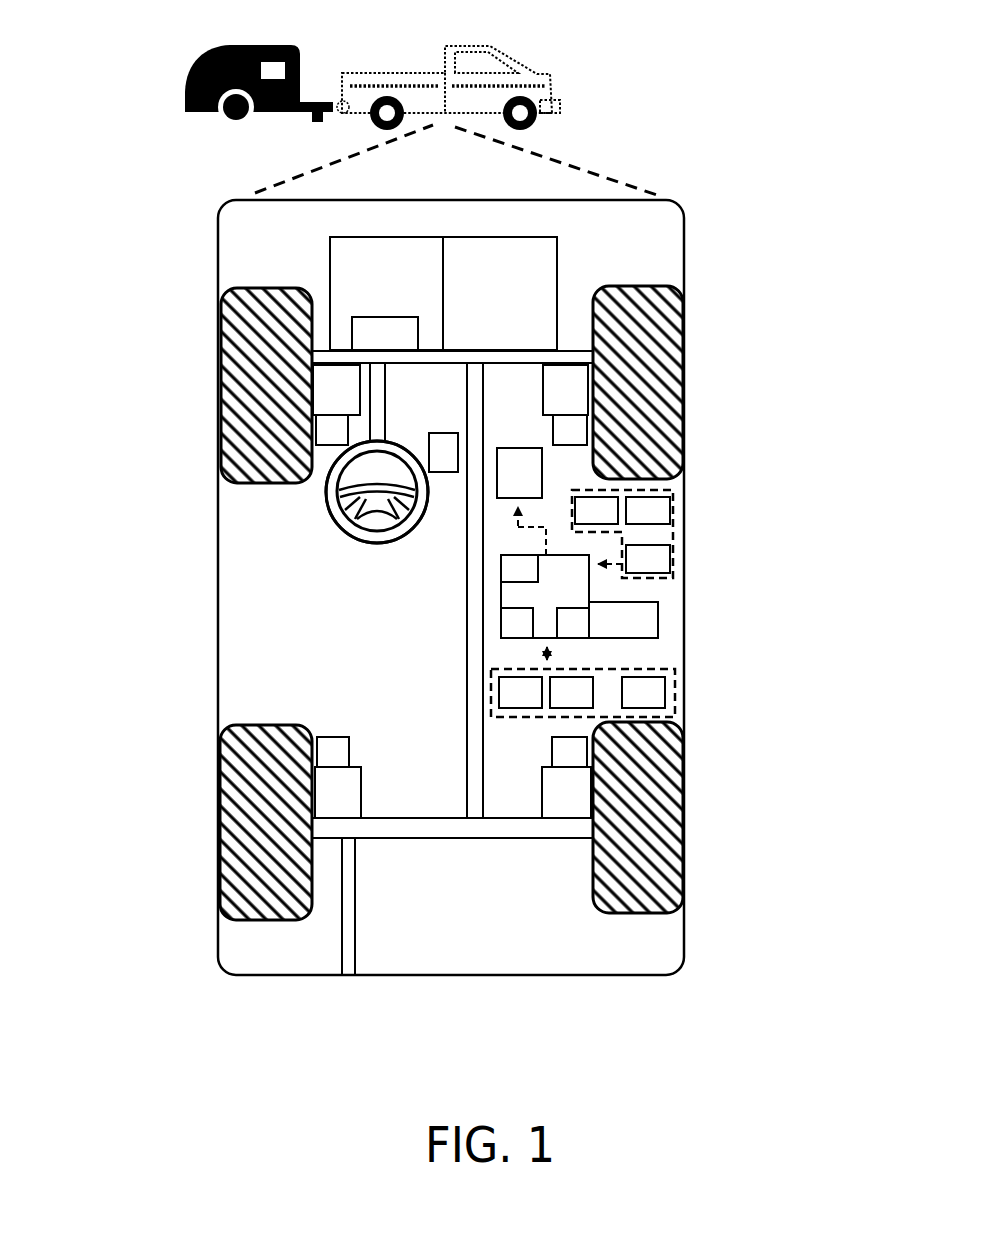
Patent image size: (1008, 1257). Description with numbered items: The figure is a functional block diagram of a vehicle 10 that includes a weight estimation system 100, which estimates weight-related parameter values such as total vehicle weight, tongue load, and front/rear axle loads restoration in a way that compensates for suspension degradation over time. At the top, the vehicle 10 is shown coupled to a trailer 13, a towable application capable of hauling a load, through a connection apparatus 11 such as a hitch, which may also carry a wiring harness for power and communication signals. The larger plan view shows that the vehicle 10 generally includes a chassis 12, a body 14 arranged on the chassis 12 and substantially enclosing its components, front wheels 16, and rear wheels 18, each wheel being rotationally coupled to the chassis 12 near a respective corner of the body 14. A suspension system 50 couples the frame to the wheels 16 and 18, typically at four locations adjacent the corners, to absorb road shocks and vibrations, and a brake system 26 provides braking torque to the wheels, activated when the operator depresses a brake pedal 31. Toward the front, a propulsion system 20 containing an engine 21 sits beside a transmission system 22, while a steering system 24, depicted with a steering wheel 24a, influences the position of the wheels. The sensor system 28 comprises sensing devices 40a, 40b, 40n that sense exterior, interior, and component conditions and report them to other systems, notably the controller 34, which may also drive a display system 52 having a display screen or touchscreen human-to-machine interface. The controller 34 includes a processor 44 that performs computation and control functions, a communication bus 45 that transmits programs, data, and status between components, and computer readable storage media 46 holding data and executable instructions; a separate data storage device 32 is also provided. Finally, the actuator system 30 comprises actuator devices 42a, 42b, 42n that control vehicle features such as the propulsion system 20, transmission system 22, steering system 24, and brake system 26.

The vehicle 10 is at (535, 72).
The connection apparatus 11 is at (315, 100).
The chassis 12 is at (467, 755).
The trailer 13 is at (191, 67).
The body 14 is at (218, 682).
The front wheels 16 is at (272, 287).
The rear wheels 18 is at (283, 918).
The propulsion system 20 is at (374, 306).
The engine 21 is at (373, 344).
The transmission system 22 is at (486, 306).
The steering system 24 is at (387, 438).
The steering wheel 24a is at (340, 523).
The brake system 26 is at (324, 400).
The sensor system 28 is at (648, 534).
The actuator system 30 is at (583, 726).
The brake pedal 31 is at (430, 462).
The data storage device 32 is at (610, 631).
The controller 34 is at (532, 607).
The sensing device 40a is at (577, 521).
The sensing device 40b is at (629, 521).
The sensing device 40n is at (629, 570).
The actuator device 42a is at (501, 702).
The actuator device 42b is at (552, 702).
The actuator device 42n is at (624, 702).
The processor 44 is at (504, 636).
The communication bus 45 is at (506, 579).
The computer readable storage device or media 46 is at (560, 636).
The suspension system 50 is at (319, 440).
The display system 52 is at (506, 483).
The weight estimation system 100 is at (729, 276).